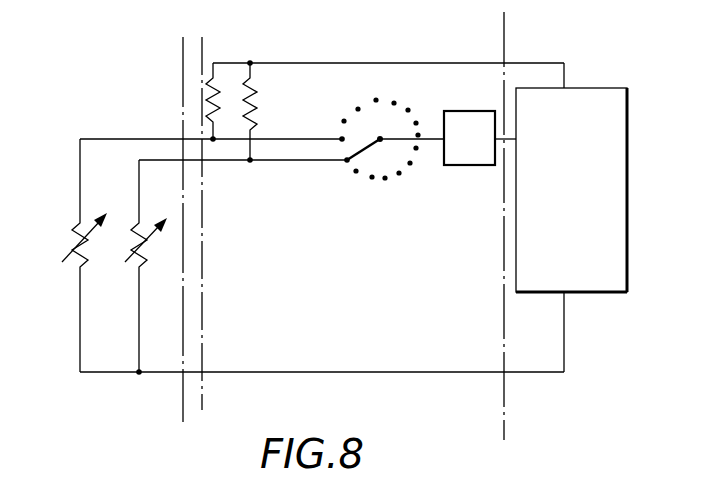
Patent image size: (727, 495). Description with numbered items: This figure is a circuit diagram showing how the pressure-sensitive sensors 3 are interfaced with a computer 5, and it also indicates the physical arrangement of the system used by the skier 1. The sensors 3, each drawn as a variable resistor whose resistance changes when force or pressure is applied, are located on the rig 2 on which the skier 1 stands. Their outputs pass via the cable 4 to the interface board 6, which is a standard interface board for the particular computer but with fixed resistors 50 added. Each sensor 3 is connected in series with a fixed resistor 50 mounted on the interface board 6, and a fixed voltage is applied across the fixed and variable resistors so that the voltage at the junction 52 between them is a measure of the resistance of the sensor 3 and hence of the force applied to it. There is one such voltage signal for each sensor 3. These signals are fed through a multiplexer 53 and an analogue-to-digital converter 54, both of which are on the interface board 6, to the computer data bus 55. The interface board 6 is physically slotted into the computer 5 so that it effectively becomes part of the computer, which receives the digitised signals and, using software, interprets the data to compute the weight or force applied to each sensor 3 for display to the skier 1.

The skier 1 is at (566, 322).
The rig 2 is at (116, 414).
The sensors 3 is at (83, 266).
The cable 4 is at (183, 441).
The computer 5 is at (554, 415).
The interface board 6 is at (329, 415).
The fixed resistor 50 is at (256, 100).
The junction 52 is at (273, 191).
The multiplexer 53 is at (382, 128).
The analogue-to-digital converter 54 is at (453, 152).
The computer data bus 55 is at (548, 154).